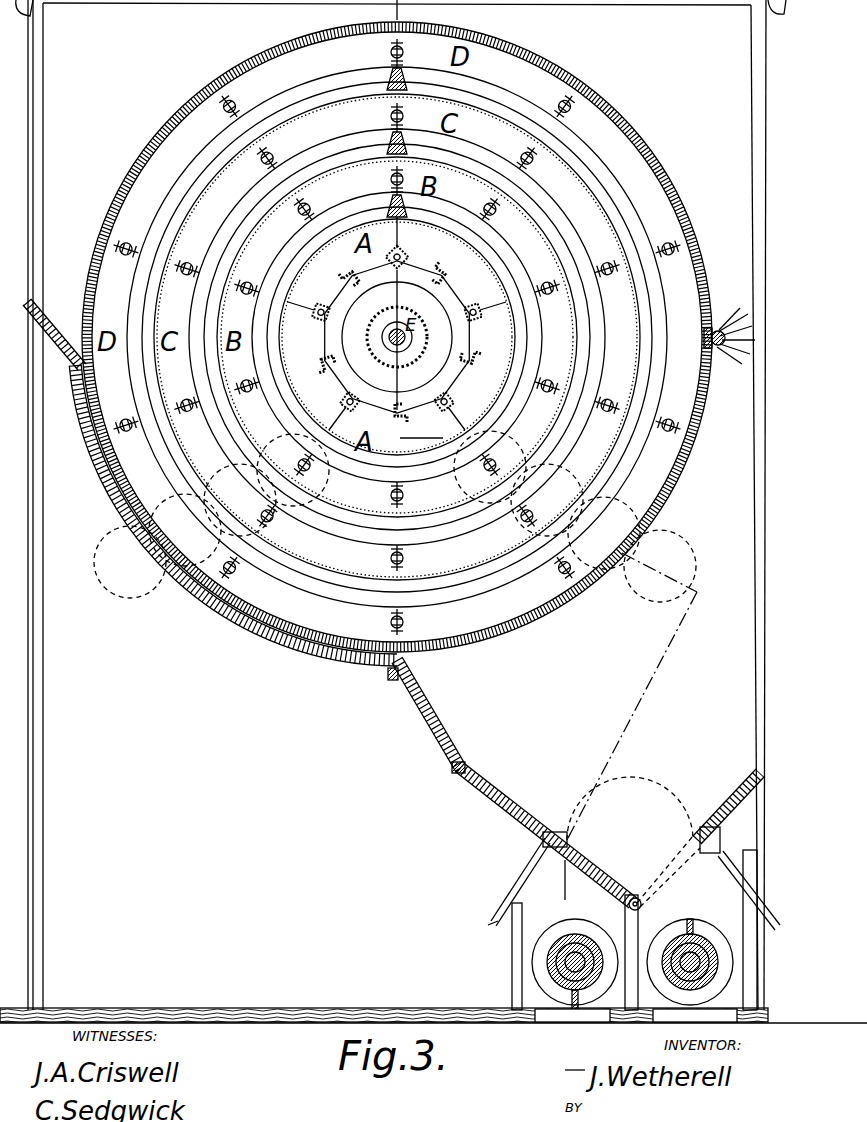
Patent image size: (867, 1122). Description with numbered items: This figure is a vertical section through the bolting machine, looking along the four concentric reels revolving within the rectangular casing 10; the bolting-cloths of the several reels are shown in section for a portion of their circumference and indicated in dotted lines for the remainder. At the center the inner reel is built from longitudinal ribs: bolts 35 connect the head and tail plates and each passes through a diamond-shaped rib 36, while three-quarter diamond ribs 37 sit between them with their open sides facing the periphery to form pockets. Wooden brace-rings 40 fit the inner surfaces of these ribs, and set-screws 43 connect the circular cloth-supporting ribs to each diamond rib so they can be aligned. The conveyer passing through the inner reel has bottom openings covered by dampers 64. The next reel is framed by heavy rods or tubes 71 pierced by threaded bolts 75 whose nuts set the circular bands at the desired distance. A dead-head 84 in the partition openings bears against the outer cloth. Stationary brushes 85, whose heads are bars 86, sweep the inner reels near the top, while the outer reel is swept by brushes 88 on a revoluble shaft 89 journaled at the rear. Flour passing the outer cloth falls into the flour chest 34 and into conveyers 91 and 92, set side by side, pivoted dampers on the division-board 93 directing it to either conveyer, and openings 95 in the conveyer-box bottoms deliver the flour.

The casing 10 is at (762, 278).
The flour chamber or chest 34 is at (633, 731).
The bolts 35 is at (348, 284).
The rib 36 is at (406, 260).
The ribs 37 is at (447, 274).
The brace-rings 40 is at (465, 366).
The set-screws 43 is at (320, 310).
The dampers 64 is at (397, 340).
The rods or tubes 71 is at (186, 266).
The bolts 75 is at (247, 285).
The dead-head 84 is at (129, 170).
The stationary brushes 85 is at (406, 209).
The bar 86 is at (393, 70).
The brushes 88 is at (720, 350).
The revoluble shaft 89 is at (720, 328).
The conveyer 91 is at (583, 918).
The conveyer 92 is at (703, 932).
The division-board 93 is at (632, 938).
The openings 95 is at (572, 1023).